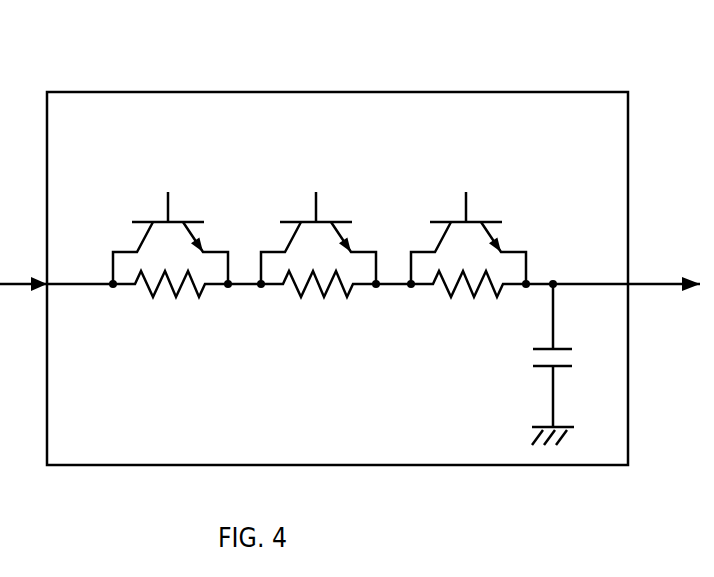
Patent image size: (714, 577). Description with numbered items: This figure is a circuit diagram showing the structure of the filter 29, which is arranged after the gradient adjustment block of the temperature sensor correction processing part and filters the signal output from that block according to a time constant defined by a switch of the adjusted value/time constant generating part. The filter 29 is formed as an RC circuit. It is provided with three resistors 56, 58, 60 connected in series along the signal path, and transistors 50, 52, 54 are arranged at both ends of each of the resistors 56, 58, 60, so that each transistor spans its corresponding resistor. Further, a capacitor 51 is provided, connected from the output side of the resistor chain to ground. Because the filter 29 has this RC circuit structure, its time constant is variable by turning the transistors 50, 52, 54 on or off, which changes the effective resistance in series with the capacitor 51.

The filter 29 is at (503, 92).
The transistor 50 is at (445, 222).
The transistor 52 is at (297, 222).
The transistor 54 is at (149, 222).
The resistor 56 is at (462, 300).
The resistor 58 is at (312, 300).
The resistor 60 is at (165, 300).
The capacitor 51 is at (565, 358).